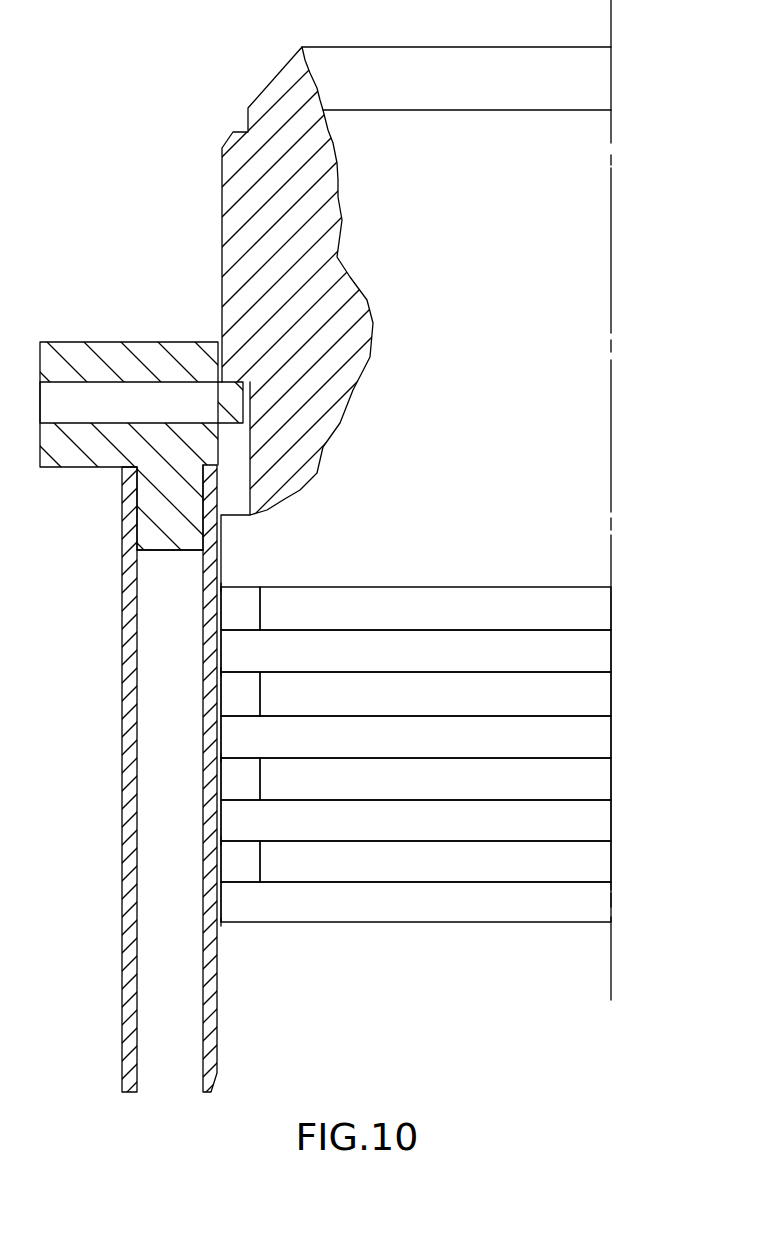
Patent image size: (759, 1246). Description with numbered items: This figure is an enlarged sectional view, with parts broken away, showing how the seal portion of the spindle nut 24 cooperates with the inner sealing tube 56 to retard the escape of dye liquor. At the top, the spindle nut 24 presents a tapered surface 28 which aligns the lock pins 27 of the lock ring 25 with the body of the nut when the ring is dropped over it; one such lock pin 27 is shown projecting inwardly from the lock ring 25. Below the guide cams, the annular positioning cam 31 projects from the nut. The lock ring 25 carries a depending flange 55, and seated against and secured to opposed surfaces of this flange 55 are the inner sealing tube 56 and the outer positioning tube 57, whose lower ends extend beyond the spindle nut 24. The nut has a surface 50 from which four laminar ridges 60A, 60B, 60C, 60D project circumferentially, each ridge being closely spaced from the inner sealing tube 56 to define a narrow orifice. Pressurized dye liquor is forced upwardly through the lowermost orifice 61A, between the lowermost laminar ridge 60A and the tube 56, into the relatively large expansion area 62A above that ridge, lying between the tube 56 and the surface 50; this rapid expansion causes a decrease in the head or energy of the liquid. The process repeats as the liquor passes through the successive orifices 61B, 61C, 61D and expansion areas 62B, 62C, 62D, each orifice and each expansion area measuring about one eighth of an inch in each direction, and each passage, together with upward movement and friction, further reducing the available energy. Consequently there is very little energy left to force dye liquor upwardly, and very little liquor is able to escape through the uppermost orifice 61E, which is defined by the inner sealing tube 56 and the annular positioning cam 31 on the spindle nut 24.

The spindle nut 24 is at (222, 198).
The lock ring 25 is at (53, 342).
The lock pin 27 is at (75, 395).
The tapered surface 28 is at (373, 58).
The positioning cam 31 is at (228, 523).
The surface of the nut 50 is at (262, 608).
The depending flange 55 is at (158, 552).
The inner sealing tube 56 is at (215, 998).
The outer positioning tube 57 is at (123, 962).
The lowermost laminar ridge 60A is at (373, 912).
The laminar ridge 60B is at (598, 820).
The laminar ridge 60C is at (602, 740).
The laminar ridge 60D is at (605, 648).
The lowermost orifice 61A is at (222, 922).
The orifice 61B is at (222, 841).
The orifice 61C is at (222, 758).
The orifice 61D is at (222, 672).
The uppermost orifice 61E is at (222, 587).
The expansion area 62A is at (242, 872).
The expansion area 62B is at (238, 773).
The expansion area 62C is at (240, 687).
The expansion area 62D is at (240, 600).